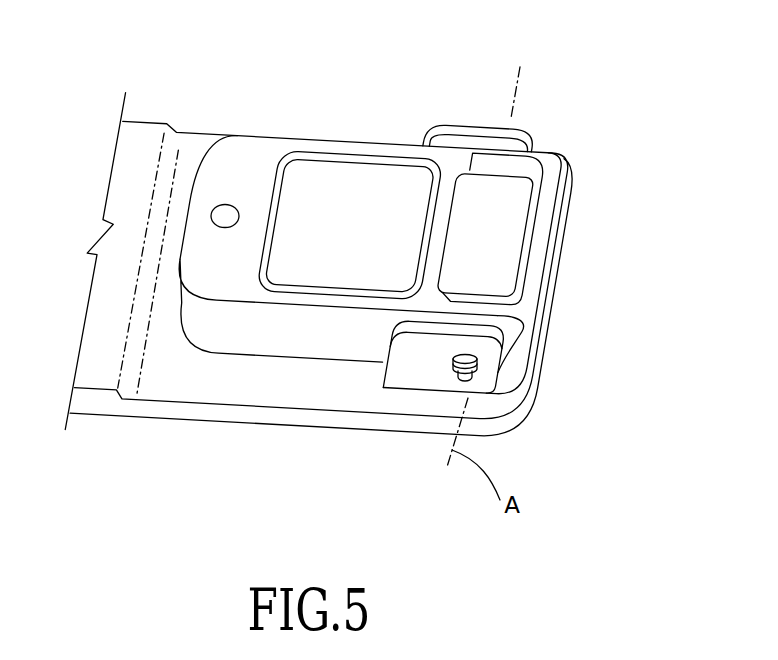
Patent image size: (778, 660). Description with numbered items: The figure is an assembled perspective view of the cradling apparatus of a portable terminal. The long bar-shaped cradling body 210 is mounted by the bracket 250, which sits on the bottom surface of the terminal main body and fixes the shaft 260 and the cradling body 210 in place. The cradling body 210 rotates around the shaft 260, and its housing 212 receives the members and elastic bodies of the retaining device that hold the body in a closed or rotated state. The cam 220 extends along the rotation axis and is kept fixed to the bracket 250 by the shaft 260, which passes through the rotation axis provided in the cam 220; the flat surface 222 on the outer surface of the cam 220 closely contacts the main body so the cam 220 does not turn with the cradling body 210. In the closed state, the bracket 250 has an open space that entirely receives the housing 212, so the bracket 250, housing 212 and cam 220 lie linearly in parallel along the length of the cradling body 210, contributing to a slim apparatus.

The cradling body 210 is at (194, 443).
The housing 212 is at (357, 178).
The cam 220 is at (547, 234).
The flat surface 222 is at (502, 263).
The bracket 250 is at (245, 150).
The shaft 260 is at (458, 376).